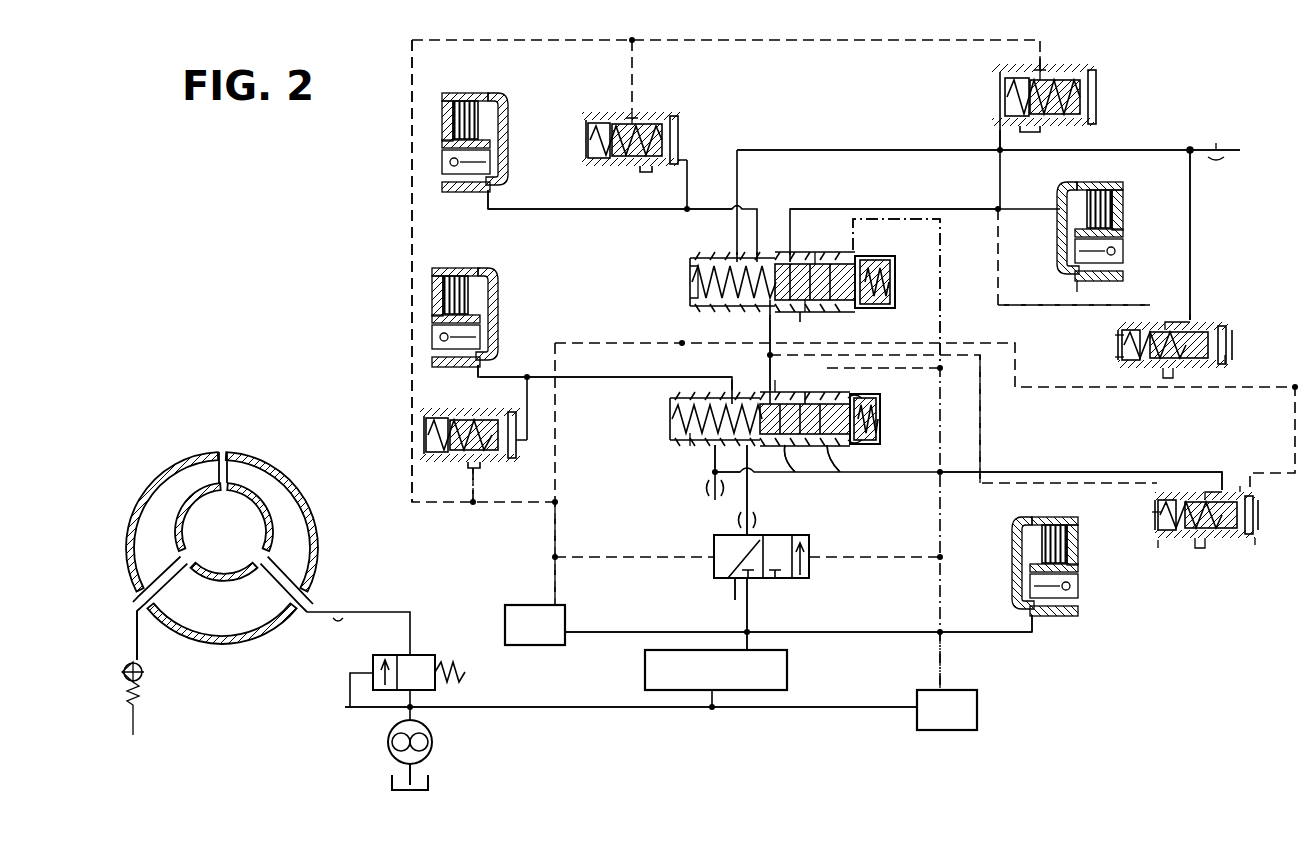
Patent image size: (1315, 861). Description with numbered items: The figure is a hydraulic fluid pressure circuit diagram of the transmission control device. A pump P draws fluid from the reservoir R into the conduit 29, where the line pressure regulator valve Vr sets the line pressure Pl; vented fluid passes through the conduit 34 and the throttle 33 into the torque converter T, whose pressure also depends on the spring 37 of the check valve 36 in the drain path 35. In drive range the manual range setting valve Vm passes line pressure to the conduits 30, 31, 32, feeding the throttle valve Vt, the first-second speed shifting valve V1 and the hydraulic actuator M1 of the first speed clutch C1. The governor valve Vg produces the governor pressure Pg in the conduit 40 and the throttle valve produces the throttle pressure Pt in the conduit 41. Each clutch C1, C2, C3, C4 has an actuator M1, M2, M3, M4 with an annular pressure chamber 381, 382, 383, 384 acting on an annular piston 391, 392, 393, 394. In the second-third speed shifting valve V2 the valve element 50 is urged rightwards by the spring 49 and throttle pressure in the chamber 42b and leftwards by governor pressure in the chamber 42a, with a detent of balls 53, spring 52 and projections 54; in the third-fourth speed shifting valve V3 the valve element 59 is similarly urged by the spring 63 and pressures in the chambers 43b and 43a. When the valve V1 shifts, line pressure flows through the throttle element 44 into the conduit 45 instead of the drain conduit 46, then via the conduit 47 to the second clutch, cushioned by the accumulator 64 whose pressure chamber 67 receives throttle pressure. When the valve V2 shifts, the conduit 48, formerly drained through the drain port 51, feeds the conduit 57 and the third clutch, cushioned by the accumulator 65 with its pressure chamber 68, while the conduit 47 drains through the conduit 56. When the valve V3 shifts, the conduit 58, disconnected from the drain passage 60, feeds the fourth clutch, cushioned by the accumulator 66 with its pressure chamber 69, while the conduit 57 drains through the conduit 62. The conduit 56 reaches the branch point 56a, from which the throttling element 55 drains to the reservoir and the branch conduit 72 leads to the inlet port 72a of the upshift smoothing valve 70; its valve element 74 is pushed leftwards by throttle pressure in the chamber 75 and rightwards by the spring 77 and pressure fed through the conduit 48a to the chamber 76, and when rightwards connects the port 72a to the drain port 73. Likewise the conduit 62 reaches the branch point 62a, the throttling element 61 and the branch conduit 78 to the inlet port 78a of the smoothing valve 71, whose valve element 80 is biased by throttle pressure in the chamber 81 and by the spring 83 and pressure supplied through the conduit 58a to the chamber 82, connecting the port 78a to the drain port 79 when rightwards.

The conduit 29 is at (553, 707).
The conduit 30 is at (620, 632).
The conduit 31 is at (749, 604).
The conduit 32 is at (870, 632).
The throttle 33 is at (342, 608).
The conduit 34 is at (393, 611).
The drain path 35 is at (138, 655).
The check valve 36 is at (142, 674).
The spring 37 is at (137, 693).
The annular pressure chamber 381 is at (1022, 540).
The annular pressure chamber 382 is at (492, 302).
The annular pressure chamber 383 is at (500, 133).
The annular pressure chamber 384 is at (1075, 215).
The annular piston 391 is at (1030, 566).
The annular piston 392 is at (486, 328).
The annular piston 393 is at (492, 163).
The annular piston 394 is at (1077, 241).
The conduit 40 is at (941, 650).
The conduit 41 is at (557, 525).
The pressure chamber 42a is at (854, 472).
The pressure chamber 42b is at (690, 446).
The pressure chamber 43a is at (870, 310).
The pressure chamber 43b is at (690, 288).
The throttle element 44 is at (740, 520).
The conduit 45 is at (749, 478).
The drain conduit 46 is at (730, 599).
The conduit 47 is at (617, 378).
The conduit 48 is at (768, 327).
The conduit 48a is at (982, 425).
The compression coil spring 49 is at (680, 410).
The valve element 50 is at (798, 392).
The drain port 51 is at (803, 472).
The compression coil spring 52 is at (878, 422).
The balls 53 is at (856, 400).
The projections 54 is at (850, 444).
The throttling element 55 is at (710, 490).
The conduit 56 is at (713, 458).
The branch point 56a is at (713, 474).
The conduit 57 is at (633, 208).
The conduit 58 is at (921, 207).
The conduit 58a is at (1053, 310).
The valve element 59 is at (817, 256).
The drain passage 60 is at (806, 312).
The throttling element 61 is at (1216, 146).
The conduit 62 is at (822, 150).
The branch point 62a is at (1190, 148).
The compression coil spring 63 is at (696, 258).
The accumulator 64 is at (471, 411).
The accumulator 65 is at (684, 107).
The accumulator 66 is at (1111, 92).
The pressure chamber 67 is at (478, 468).
The pressure chamber 68 is at (638, 111).
The pressure chamber 69 is at (1020, 71).
The upshift smoothing valve 70 is at (1232, 548).
The upshift smoothing valve 71 is at (1236, 344).
The branch conduit 72 is at (1082, 472).
The inlet port 72a is at (1215, 486).
The drain port 73 is at (1200, 544).
The valve element 74 is at (1240, 488).
The chamber 75 is at (1255, 538).
The chamber 76 is at (1158, 541).
The compression coil spring 77 is at (1150, 515).
The branch conduit 78 is at (1190, 232).
The inlet port 78a is at (1180, 318).
The drain port 79 is at (1166, 374).
The valve element 80 is at (1199, 318).
The chamber 81 is at (1228, 360).
The chamber 82 is at (1118, 358).
The compression coil spring 83 is at (1118, 338).
The first speed clutch C1 is at (1087, 516).
The second clutch C2 is at (504, 279).
The third clutch C3 is at (472, 194).
The fourth clutch C4 is at (1059, 182).
The hydraulic actuator M1 is at (1005, 591).
The hydraulic actuator M2 is at (424, 353).
The hydraulic actuator M3 is at (488, 94).
The hydraulic actuator M4 is at (1053, 263).
The pump P is at (432, 742).
The hydraulic fluid reservoir R is at (428, 783).
The torque converter T is at (260, 460).
The throttle pressure Pt is at (410, 185).
The governor pressure Pg is at (892, 224).
The line pressure Pl is at (638, 707).
The first-second speed shifting valve V1 is at (814, 535).
The second-third speed shifting valve V2 is at (768, 409).
The third-fourth speed shifting valve V3 is at (775, 277).
The line pressure regulator valve Vr is at (430, 650).
The throttle valve Vt is at (535, 625).
The manual range setting valve Vm is at (716, 670).
The governor valve Vg is at (947, 710).